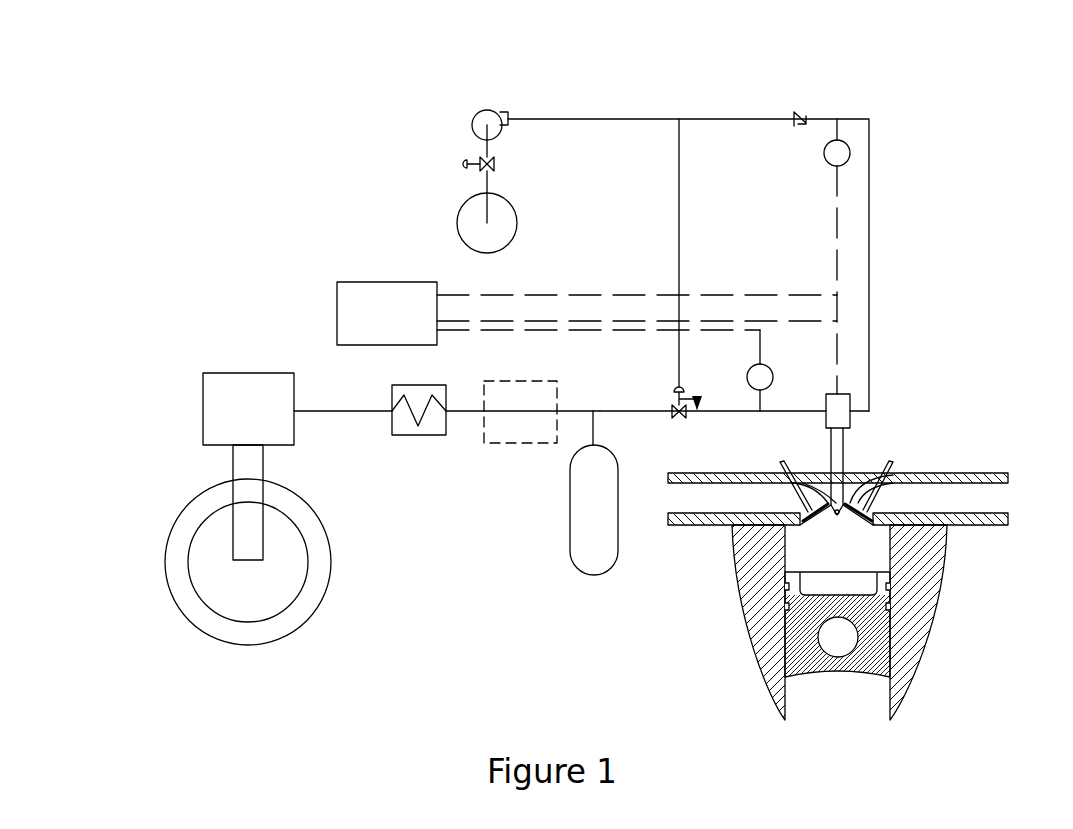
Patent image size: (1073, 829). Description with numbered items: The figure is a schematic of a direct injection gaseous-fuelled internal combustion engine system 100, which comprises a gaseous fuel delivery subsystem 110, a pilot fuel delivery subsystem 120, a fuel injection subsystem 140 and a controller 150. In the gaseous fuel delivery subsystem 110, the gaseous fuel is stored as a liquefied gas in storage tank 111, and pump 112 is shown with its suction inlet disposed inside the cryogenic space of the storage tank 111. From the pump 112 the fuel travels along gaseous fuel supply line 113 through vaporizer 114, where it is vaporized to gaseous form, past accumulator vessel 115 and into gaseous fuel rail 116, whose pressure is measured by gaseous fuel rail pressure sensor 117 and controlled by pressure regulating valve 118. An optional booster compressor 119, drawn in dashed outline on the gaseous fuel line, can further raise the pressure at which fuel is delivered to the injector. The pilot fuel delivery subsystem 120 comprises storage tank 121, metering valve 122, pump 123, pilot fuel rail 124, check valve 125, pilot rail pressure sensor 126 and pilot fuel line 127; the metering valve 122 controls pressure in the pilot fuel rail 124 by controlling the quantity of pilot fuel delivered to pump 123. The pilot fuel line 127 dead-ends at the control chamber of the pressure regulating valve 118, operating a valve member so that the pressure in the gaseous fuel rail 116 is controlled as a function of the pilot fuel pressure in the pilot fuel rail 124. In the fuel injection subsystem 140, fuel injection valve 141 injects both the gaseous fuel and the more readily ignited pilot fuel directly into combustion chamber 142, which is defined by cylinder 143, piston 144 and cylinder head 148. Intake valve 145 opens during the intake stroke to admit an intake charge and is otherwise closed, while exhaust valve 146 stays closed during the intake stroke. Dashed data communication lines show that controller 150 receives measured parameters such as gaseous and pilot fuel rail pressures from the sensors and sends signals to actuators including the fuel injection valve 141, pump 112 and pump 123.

The internal combustion engine system 100 is at (250, 108).
The gaseous fuel delivery subsystem 110 is at (183, 305).
The storage tank 111 is at (233, 585).
The pump 112 is at (233, 411).
The gaseous fuel supply line 113 is at (338, 413).
The vaporizer 114 is at (415, 438).
The accumulator vessel 115 is at (588, 519).
The gaseous fuel rail 116 is at (735, 413).
The gaseous fuel rail pressure sensor 117 is at (765, 370).
The pressure regulating valve 118 is at (673, 404).
The booster compressor 119 is at (483, 433).
The pilot fuel delivery subsystem 120 is at (530, 53).
The storage tank 121 is at (465, 220).
The metering valve 122 is at (483, 160).
The pump 123 is at (473, 118).
The pilot fuel rail 124 is at (603, 119).
The check valve 125 is at (801, 114).
The pilot rail pressure sensor 126 is at (838, 158).
The pilot fuel line 127 is at (680, 212).
The fuel injection subsystem 140 is at (887, 436).
The fuel injection valve 141 is at (835, 437).
The combustion chamber 142 is at (887, 558).
The cylinder 143 is at (787, 695).
The piston 144 is at (785, 623).
The intake valve 145 is at (878, 504).
The exhaust valve 146 is at (803, 513).
The cylinder head 148 is at (998, 514).
The controller 150 is at (358, 298).